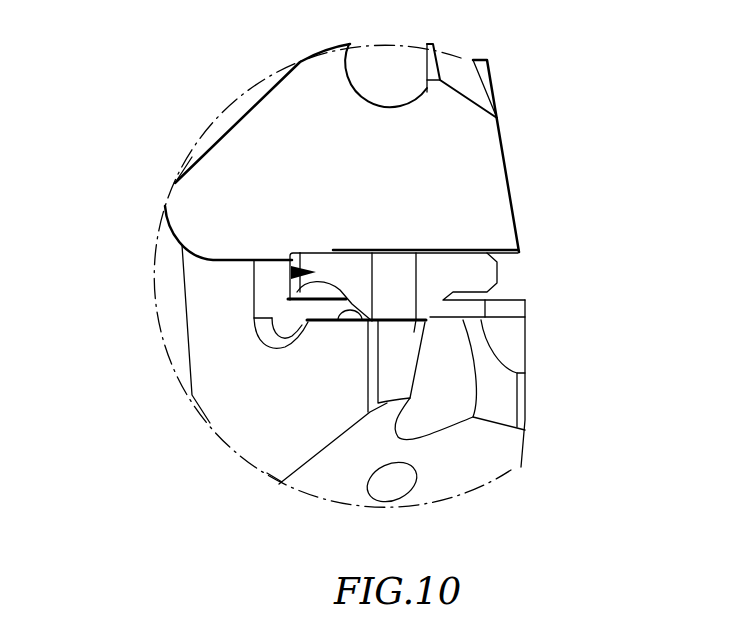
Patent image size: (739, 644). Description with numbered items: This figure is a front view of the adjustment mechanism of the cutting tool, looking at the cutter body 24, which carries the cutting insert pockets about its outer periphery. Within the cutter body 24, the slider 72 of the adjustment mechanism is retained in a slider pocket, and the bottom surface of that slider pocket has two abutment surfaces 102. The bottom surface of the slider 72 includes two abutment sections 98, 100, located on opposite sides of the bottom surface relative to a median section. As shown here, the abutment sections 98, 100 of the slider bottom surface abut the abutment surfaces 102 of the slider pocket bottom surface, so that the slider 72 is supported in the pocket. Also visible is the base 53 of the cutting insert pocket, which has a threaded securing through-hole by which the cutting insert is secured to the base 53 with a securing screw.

The cutter body 24 is at (482, 165).
The slider 72 is at (290, 270).
The abutment surfaces 102 is at (292, 288).
The abutment section 100 is at (315, 322).
The abutment section 98 is at (440, 303).
The base 53 is at (340, 330).